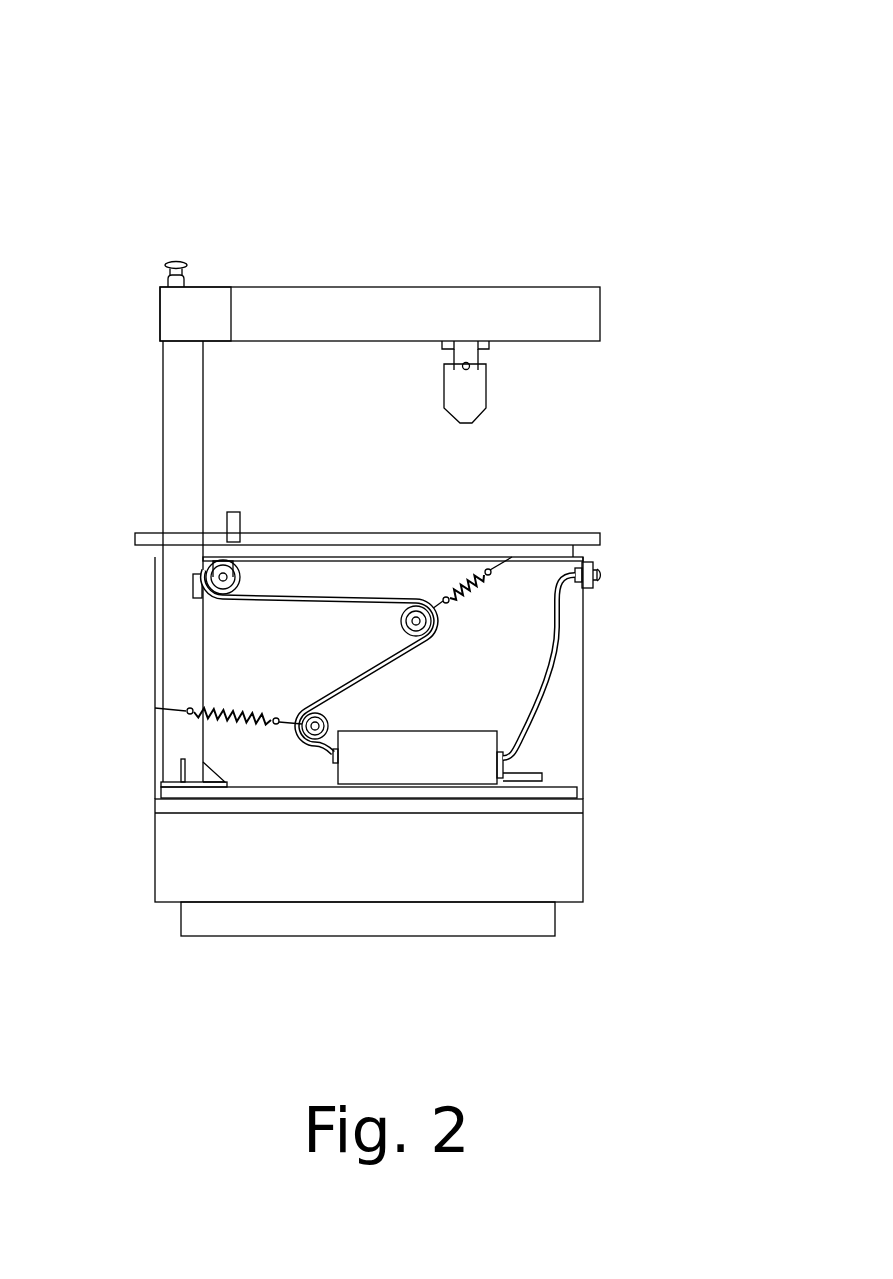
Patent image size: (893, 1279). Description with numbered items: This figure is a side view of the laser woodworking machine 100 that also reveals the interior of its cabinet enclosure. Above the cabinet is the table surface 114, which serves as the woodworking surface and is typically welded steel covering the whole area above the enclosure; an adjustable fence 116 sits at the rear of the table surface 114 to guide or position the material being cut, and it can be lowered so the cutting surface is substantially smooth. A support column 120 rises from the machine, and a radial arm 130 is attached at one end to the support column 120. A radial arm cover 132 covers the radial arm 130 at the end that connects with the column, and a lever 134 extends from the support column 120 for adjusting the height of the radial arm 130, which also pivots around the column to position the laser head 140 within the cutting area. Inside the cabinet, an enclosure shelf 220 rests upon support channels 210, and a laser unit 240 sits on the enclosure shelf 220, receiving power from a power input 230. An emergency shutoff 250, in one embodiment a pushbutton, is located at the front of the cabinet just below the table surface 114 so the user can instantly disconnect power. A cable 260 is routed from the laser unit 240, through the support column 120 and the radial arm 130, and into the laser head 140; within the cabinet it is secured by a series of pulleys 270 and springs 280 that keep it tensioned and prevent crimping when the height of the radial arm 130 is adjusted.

The laser woodworking machine 100 is at (450, 86).
The table surface 114 is at (590, 533).
The adjustable fence 116 is at (227, 517).
The support column 120 is at (162, 388).
The radial arm 130 is at (418, 287).
The radial arm cover 132 is at (218, 287).
The lever 134 is at (177, 262).
The laser head 140 is at (486, 387).
The support channels 210 is at (583, 808).
The enclosure shelf 220 is at (583, 790).
The power input 230 is at (542, 777).
The laser unit 240 is at (503, 733).
The emergency shutoff 250 is at (607, 576).
The cable 260 is at (315, 603).
The pulleys 270 is at (193, 596).
The springs 280 is at (222, 718).